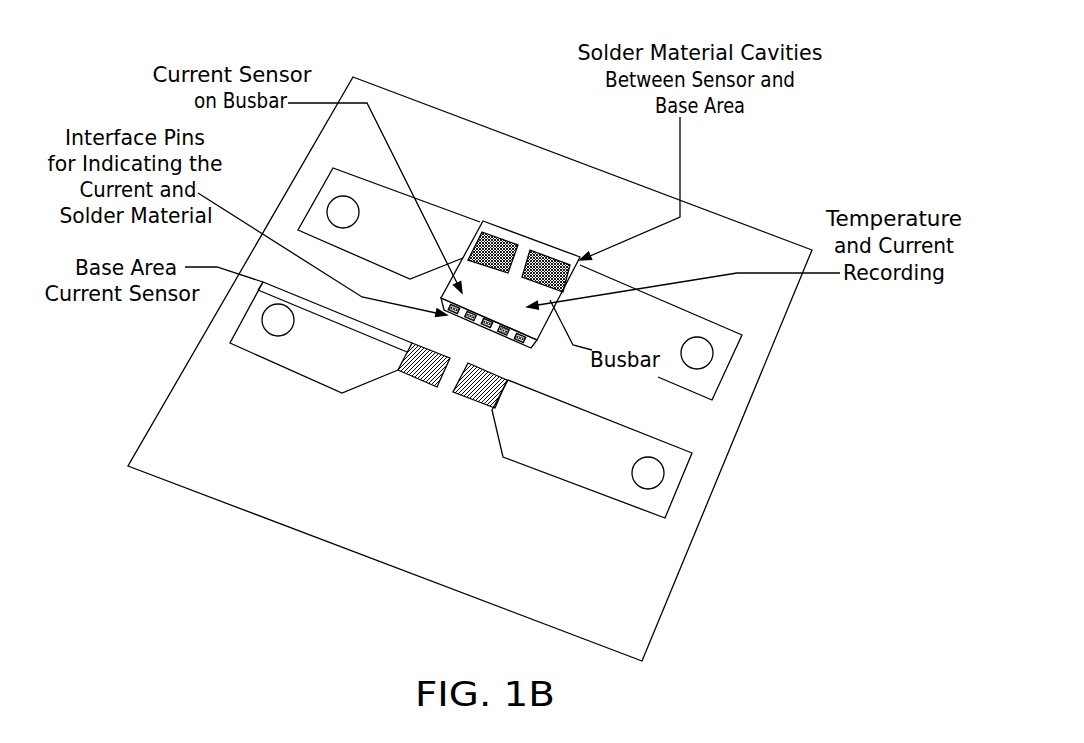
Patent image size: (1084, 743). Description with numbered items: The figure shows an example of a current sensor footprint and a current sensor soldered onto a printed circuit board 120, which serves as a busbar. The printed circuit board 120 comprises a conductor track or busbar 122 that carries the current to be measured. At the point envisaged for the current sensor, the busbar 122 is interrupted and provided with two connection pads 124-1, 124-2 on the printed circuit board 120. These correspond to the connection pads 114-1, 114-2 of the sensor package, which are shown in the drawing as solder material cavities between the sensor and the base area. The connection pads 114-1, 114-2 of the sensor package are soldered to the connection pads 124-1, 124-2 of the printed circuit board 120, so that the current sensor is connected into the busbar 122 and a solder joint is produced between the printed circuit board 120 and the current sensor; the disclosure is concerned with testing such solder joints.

The connection pad 114-1 is at (490, 228).
The connection pad 114-2 is at (553, 257).
The printed circuit board 120 is at (527, 233).
The busbar 122 is at (722, 345).
The connection pad 124-1 is at (414, 393).
The connection pad 124-2 is at (478, 418).